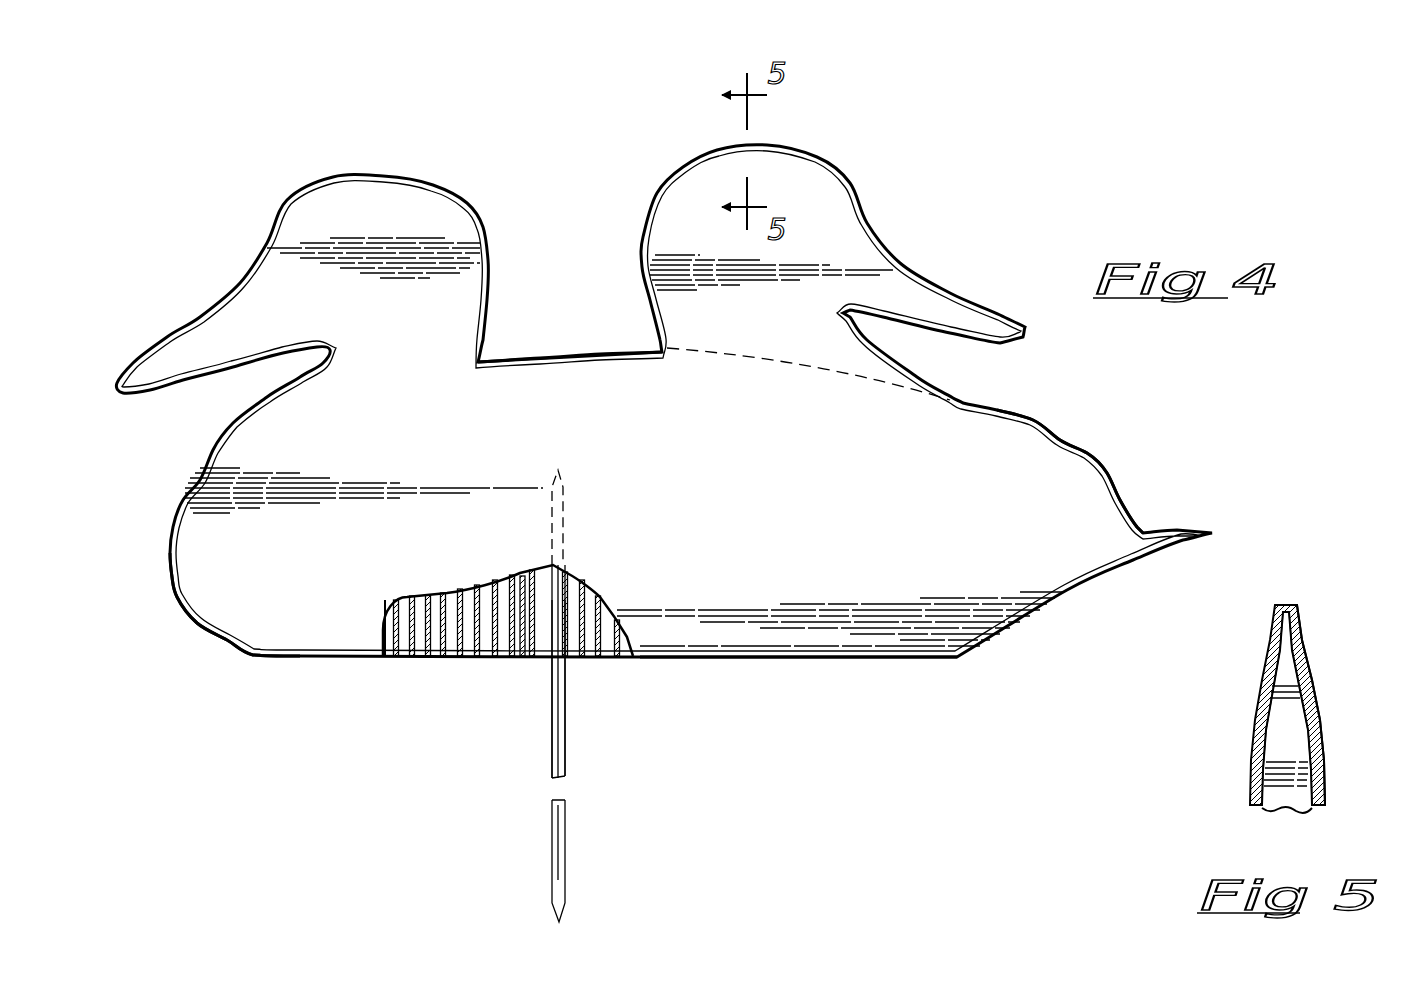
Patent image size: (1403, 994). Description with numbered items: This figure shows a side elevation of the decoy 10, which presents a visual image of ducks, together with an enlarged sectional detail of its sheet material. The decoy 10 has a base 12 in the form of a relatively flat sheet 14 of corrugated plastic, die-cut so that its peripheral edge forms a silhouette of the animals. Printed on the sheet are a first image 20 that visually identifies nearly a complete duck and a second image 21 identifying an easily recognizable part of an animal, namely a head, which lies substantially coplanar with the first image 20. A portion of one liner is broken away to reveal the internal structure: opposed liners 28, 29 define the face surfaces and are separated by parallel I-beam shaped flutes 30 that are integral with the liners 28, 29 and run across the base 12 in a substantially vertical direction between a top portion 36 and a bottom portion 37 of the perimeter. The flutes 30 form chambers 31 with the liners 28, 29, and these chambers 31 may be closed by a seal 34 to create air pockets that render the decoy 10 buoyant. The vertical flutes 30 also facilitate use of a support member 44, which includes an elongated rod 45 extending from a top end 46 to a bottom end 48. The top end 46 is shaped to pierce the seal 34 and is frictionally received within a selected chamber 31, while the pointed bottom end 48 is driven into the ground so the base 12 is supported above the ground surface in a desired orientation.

In FIG. 4, the decoy 10 is at (982, 174).
In FIG. 4, the base 12 is at (1028, 412).
In FIG. 4, the flat sheet 14 is at (1055, 462).
In FIG. 4, the first image 20 is at (448, 325).
In FIG. 4, the second image 21 is at (682, 218).
In FIG. 4, the liner 28 is at (312, 636).
In FIG. 5, the liner 28 is at (1250, 772).
In FIG. 4, the liner 29 is at (398, 656).
In FIG. 5, the liner 29 is at (1324, 772).
In FIG. 4, the flutes 30 is at (512, 587).
In FIG. 5, the flutes 30 is at (1286, 798).
In FIG. 4, the chambers 31 is at (595, 598).
In FIG. 5, the chambers 31 is at (1283, 725).
In FIG. 4, the seal 34 is at (833, 168).
In FIG. 5, the seal 34 is at (1273, 617).
In FIG. 4, the top portion 36 is at (618, 347).
In FIG. 4, the bottom portion 37 is at (752, 658).
In FIG. 4, the support member 44 is at (586, 710).
In FIG. 4, the elongated rod 45 is at (568, 755).
In FIG. 4, the top end 46 is at (561, 503).
In FIG. 4, the bottom end 48 is at (553, 911).